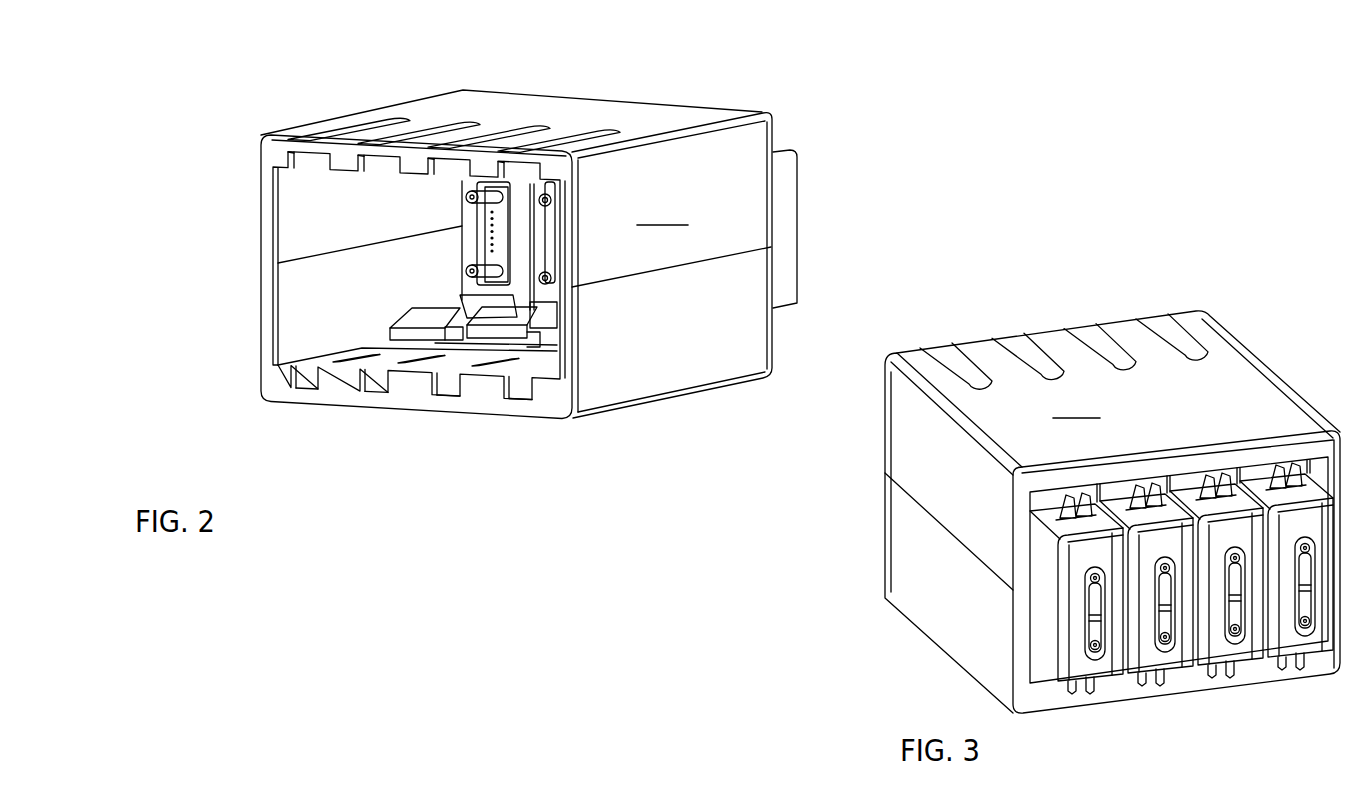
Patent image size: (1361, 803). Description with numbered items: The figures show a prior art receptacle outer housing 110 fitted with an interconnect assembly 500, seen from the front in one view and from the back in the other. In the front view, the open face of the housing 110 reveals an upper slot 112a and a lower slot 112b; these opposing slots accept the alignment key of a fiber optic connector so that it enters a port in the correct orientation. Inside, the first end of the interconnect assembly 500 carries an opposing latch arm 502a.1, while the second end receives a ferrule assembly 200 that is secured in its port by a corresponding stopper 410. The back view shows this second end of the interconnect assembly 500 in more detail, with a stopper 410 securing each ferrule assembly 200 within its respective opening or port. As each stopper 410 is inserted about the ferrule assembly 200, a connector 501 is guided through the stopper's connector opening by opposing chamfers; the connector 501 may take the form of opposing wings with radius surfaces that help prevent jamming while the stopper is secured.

In FIG. 2, the receptacle outer housing 110 is at (516, 254).
In FIG. 3, the receptacle outer housing 110 is at (1112, 512).
In FIG. 2, the upper slot 112a is at (392, 170).
In FIG. 2, the lower slot 112b is at (511, 401).
In FIG. 2, the ferrule assembly 200 is at (502, 228).
In FIG. 2, the stopper 410 is at (785, 186).
In FIG. 3, the stopper 410 is at (1045, 612).
In FIG. 2, the interconnect assembly 500 is at (418, 281).
In FIG. 3, the connector 501 is at (1320, 472).
In FIG. 2, the opposing latch arm 502a.1 is at (412, 320).